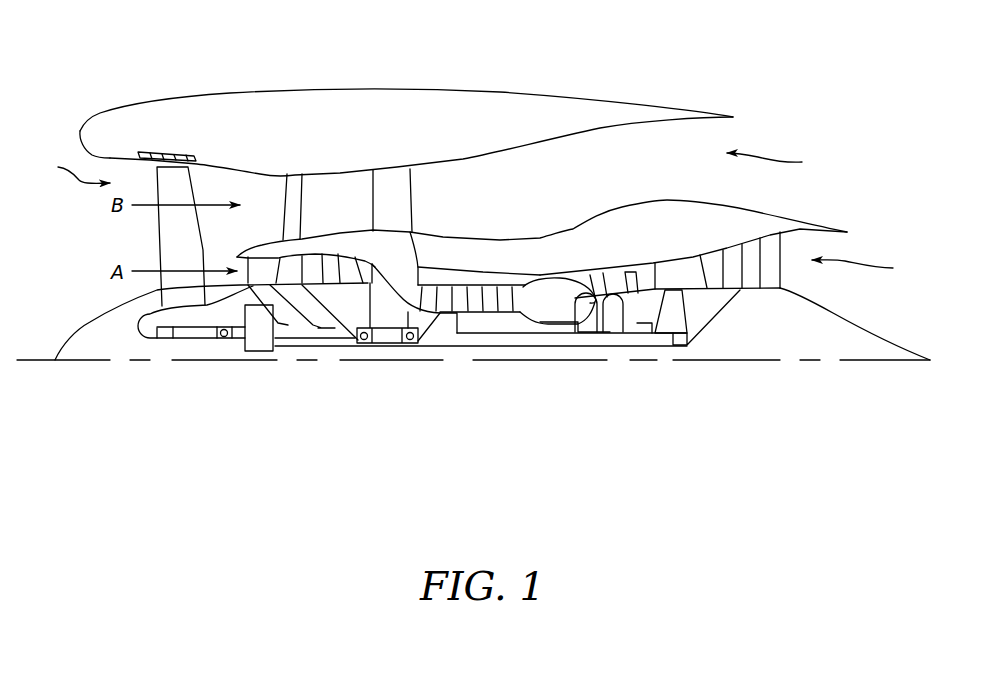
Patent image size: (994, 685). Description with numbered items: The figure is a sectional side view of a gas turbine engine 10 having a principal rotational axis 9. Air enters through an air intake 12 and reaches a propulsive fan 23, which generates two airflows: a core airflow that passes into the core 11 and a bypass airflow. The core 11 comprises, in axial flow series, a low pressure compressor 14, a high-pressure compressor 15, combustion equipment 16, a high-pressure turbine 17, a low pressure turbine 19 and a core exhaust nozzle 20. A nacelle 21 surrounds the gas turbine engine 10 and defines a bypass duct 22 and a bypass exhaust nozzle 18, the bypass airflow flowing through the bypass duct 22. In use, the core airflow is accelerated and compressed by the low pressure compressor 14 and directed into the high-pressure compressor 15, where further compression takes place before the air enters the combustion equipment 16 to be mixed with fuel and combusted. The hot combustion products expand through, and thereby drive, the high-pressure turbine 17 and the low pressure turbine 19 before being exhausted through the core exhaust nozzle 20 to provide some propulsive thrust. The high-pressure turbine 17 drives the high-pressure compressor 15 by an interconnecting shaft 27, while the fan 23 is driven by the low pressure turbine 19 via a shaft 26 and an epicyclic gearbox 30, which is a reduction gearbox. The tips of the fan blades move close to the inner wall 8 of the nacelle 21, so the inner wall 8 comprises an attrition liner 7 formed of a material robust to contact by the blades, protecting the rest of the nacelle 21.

The attrition liner 7 is at (176, 152).
The inner wall of the nacelle 8 is at (107, 160).
The principal rotational axis 9 is at (635, 361).
The gas turbine engine 10 is at (383, 97).
The core 11 is at (520, 257).
The air intake 12 is at (110, 183).
The low pressure compressor 14 is at (330, 263).
The high-pressure compressor 15 is at (474, 297).
The combustion equipment 16 is at (546, 290).
The high-pressure turbine 17 is at (613, 283).
The bypass exhaust nozzle 18 is at (727, 153).
The low pressure turbine 19 is at (752, 248).
The core exhaust nozzle 20 is at (812, 260).
The nacelle 21 is at (387, 102).
The bypass duct 22 is at (542, 202).
The propulsive fan 23 is at (160, 238).
The shaft 26 is at (470, 346).
The interconnecting shaft 27 is at (509, 334).
The epicyclic gearbox 30 is at (257, 340).